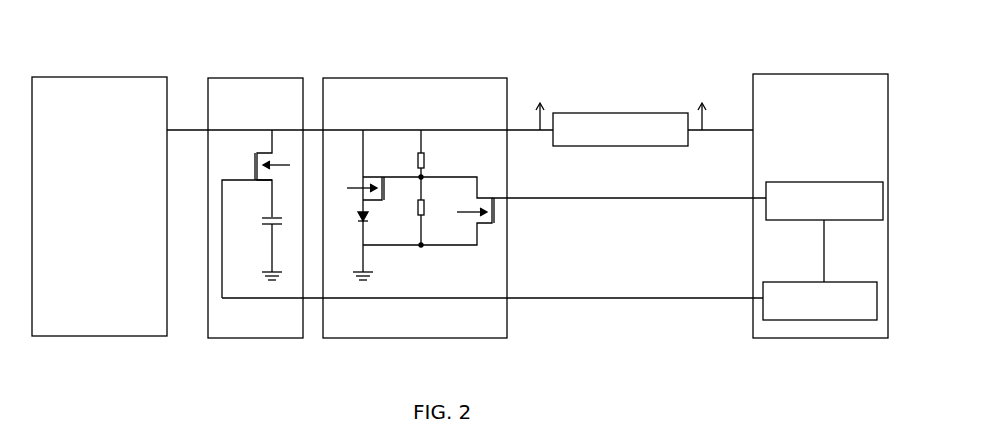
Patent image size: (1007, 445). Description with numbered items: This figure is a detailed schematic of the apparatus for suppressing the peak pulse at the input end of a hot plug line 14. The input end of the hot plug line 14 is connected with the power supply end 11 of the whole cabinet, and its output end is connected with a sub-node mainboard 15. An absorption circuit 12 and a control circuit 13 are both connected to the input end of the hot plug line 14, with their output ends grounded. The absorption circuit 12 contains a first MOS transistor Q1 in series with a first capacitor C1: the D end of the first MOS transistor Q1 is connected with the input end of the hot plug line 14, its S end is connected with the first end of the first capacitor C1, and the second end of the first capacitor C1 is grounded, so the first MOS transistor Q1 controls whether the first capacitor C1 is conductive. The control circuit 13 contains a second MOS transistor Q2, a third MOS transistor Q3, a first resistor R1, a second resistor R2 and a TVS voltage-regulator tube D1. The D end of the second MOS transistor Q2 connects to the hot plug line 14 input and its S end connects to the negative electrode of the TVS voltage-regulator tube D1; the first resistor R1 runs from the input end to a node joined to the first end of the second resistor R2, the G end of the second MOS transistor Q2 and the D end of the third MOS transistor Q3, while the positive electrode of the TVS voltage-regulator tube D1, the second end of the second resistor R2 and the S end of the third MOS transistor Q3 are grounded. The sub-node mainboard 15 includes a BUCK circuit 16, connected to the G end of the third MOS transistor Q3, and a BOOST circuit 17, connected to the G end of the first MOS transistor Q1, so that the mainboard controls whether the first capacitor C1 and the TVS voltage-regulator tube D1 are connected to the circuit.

The power supply end of the whole cabinet 11 is at (99, 179).
The absorption circuit 12 is at (264, 180).
The control circuit 13 is at (415, 180).
The hot plug line 14 is at (623, 84).
The sub-node mainboard 15 is at (820, 180).
The BUCK circuit 16 is at (857, 183).
The BOOST circuit 17 is at (853, 284).
The first MOS transistor Q1 is at (254, 173).
The first capacitor C1 is at (252, 239).
The second MOS transistor Q2 is at (359, 185).
The TVS voltage-regulator tube D1 is at (349, 219).
The first resistor R1 is at (407, 154).
The second resistor R2 is at (407, 212).
The third MOS transistor Q3 is at (470, 206).